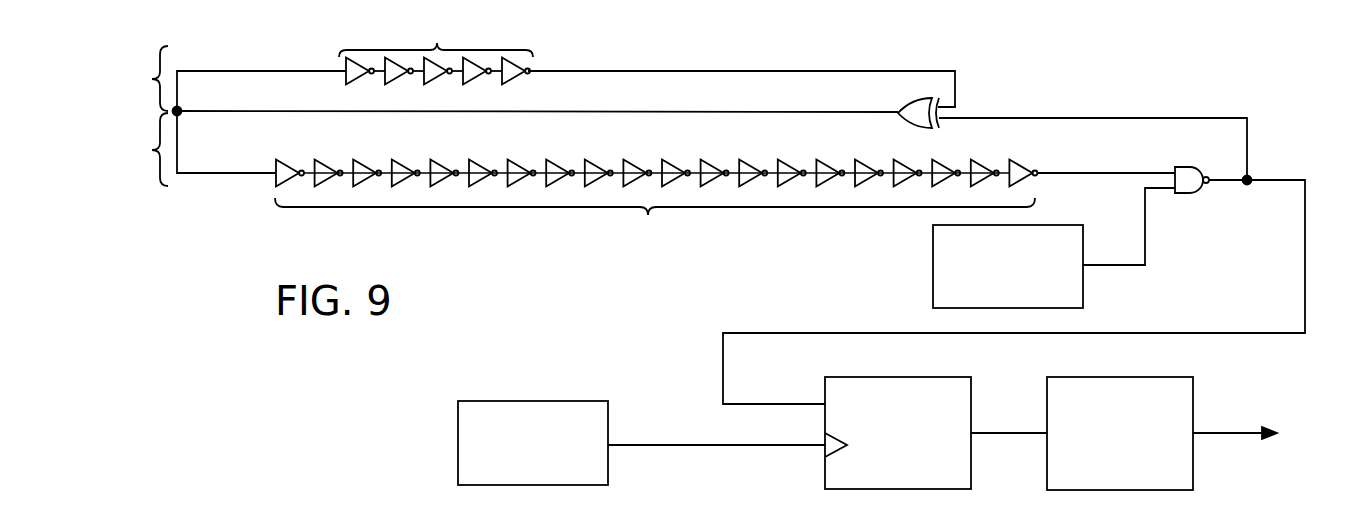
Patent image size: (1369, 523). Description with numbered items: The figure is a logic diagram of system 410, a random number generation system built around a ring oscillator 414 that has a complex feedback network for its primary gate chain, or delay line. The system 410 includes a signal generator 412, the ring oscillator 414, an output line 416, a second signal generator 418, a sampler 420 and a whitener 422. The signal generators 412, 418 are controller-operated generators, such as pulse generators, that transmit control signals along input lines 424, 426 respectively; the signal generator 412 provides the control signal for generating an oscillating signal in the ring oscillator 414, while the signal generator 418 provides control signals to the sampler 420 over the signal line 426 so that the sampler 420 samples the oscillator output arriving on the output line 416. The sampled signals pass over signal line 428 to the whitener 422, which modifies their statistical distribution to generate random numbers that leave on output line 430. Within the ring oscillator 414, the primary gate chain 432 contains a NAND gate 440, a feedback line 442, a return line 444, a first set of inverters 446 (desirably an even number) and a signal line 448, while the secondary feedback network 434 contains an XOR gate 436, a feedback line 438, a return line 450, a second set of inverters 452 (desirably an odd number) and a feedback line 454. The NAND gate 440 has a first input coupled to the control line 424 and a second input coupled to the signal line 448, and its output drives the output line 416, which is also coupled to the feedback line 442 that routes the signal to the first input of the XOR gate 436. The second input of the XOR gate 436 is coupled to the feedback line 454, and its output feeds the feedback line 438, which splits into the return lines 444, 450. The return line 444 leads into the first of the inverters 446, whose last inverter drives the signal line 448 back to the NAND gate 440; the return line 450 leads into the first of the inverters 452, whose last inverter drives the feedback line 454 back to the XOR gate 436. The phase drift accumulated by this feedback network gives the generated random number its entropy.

The system 410 is at (384, 408).
The signal generator 412 is at (933, 254).
The ring oscillator 414 is at (990, 104).
The output line 416 is at (1305, 246).
The signal generator 418 is at (505, 401).
The sampler 420 is at (865, 377).
The whitener 422 is at (1093, 377).
The input line 424 is at (1145, 244).
The input line 426 is at (687, 445).
The signal line 428 is at (983, 433).
The output line 430 is at (1213, 433).
The primary gate chain 432 is at (140, 149).
The secondary feedback network 434 is at (140, 78).
The XOR gate 436 is at (907, 100).
The feedback line 438 is at (513, 112).
The NAND gate 440 is at (1188, 193).
The feedback line 442 is at (1122, 118).
The return line 444 is at (190, 173).
The inverters 446 is at (656, 201).
The signal line 448 is at (1090, 173).
The return line 450 is at (204, 71).
The inverters 452 is at (436, 51).
The feedback line 454 is at (727, 71).